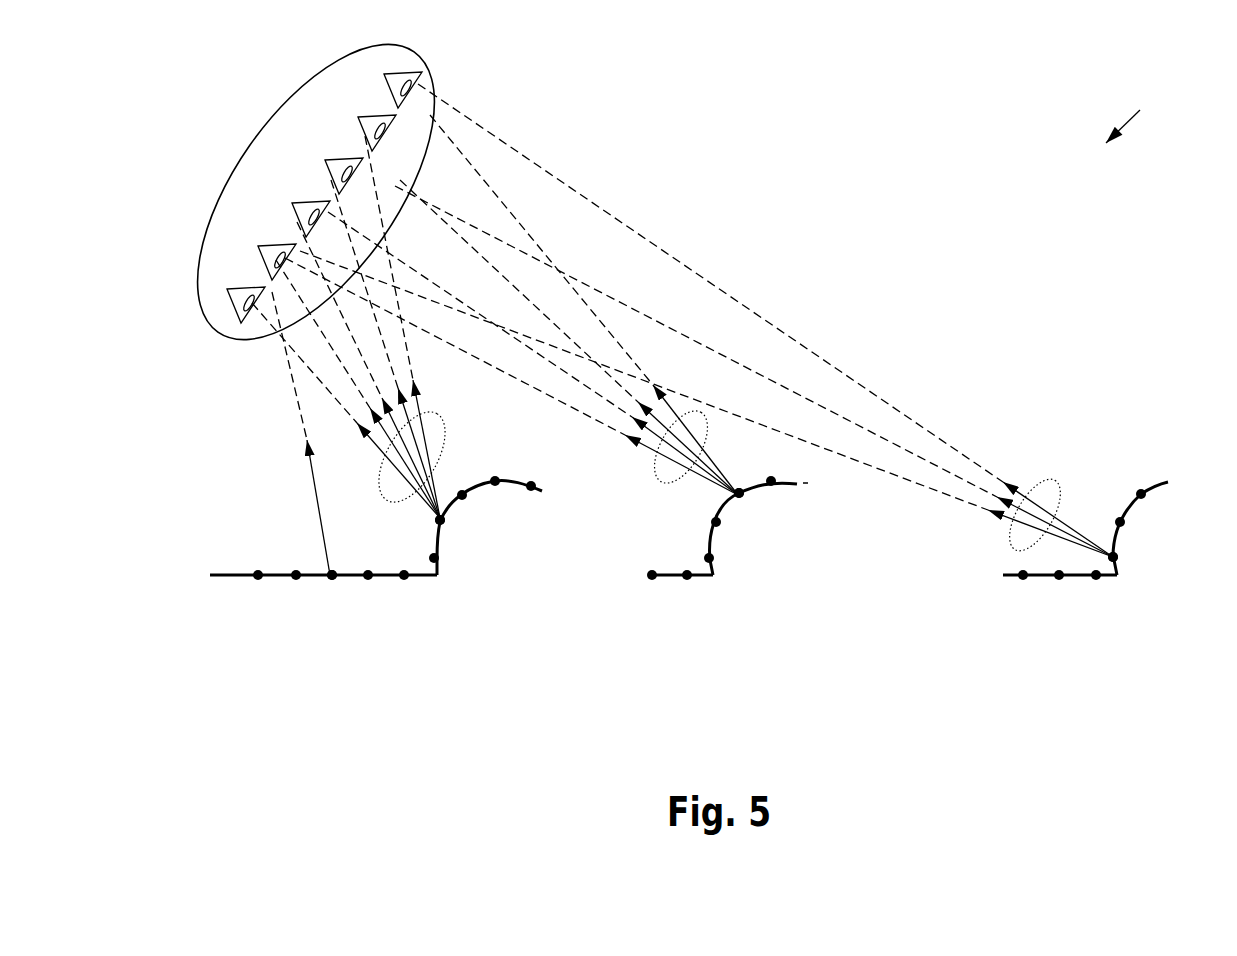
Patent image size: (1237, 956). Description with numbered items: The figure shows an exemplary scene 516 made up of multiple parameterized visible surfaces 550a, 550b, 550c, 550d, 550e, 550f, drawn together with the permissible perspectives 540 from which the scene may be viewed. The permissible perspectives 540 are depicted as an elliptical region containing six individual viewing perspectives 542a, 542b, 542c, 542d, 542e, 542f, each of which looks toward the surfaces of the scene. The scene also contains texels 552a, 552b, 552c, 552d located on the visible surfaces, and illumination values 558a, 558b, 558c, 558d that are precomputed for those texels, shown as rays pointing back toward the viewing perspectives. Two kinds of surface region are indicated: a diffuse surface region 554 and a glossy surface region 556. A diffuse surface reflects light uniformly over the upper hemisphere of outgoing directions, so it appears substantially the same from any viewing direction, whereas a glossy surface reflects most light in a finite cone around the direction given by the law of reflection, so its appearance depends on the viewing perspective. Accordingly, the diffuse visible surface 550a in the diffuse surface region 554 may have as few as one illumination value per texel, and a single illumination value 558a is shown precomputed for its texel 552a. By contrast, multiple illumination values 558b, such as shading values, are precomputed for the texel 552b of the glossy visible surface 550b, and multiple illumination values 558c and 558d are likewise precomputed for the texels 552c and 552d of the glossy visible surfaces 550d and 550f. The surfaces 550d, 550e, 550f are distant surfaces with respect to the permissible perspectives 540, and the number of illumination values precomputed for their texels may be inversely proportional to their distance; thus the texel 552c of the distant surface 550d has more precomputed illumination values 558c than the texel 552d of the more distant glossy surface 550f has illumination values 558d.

The scene 516 is at (1132, 115).
The permissible perspectives 540 is at (253, 144).
The viewing perspective 542a is at (243, 289).
The viewing perspective 542b is at (268, 246).
The viewing perspective 542c is at (298, 203).
The viewing perspective 542d is at (332, 160).
The viewing perspective 542e is at (367, 124).
The viewing perspective 542f is at (391, 93).
The diffuse visible surface 550a is at (387, 570).
The glossy visible surface 550b is at (485, 488).
The visible surface 550c is at (661, 582).
The distant glossy visible surface 550d is at (762, 487).
The distant visible surface 550e is at (1085, 580).
The distant glossy visible surface 550f is at (1161, 487).
The texel 552a is at (330, 573).
The texel 552b is at (445, 526).
The texel 552c is at (740, 500).
The texel 552d is at (1121, 556).
The diffuse surface region 554 is at (313, 630).
The glossy surface region 556 is at (491, 631).
The illumination value 558a is at (315, 489).
The illumination values 558b is at (437, 418).
The illumination values 558c is at (664, 482).
The illumination values 558d is at (1050, 480).